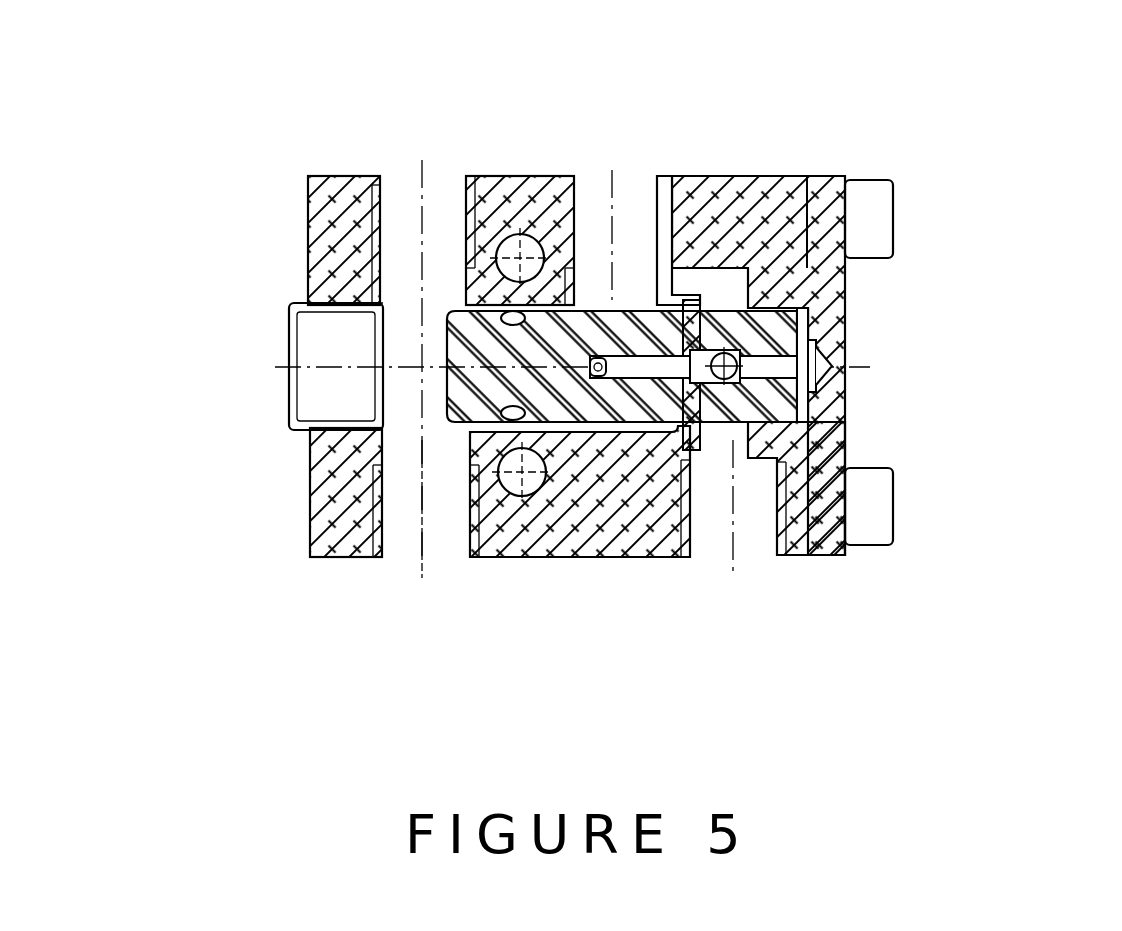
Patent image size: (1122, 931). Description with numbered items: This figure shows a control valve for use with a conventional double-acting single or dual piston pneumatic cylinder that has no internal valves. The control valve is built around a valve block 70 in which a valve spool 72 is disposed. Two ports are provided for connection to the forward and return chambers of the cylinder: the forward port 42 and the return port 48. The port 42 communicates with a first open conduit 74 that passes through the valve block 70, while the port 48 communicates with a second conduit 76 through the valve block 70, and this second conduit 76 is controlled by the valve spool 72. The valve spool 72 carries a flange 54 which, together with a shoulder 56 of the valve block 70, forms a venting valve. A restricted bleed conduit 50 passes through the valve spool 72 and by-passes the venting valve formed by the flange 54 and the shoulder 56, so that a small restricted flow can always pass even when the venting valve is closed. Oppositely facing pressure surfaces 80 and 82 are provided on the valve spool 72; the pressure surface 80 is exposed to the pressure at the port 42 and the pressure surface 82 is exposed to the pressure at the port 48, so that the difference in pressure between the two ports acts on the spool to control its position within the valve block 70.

The forward port 42 is at (428, 562).
The return port 48 is at (738, 562).
The restricted bleed conduit 50 is at (645, 378).
The flange 54 is at (700, 260).
The shoulder 56 is at (668, 277).
The valve block 70 is at (340, 508).
The valve spool 72 is at (466, 402).
The first open conduit 74 is at (420, 172).
The second conduit 76 is at (610, 168).
The pressure surface 80 is at (438, 328).
The pressure surface 82 is at (800, 322).